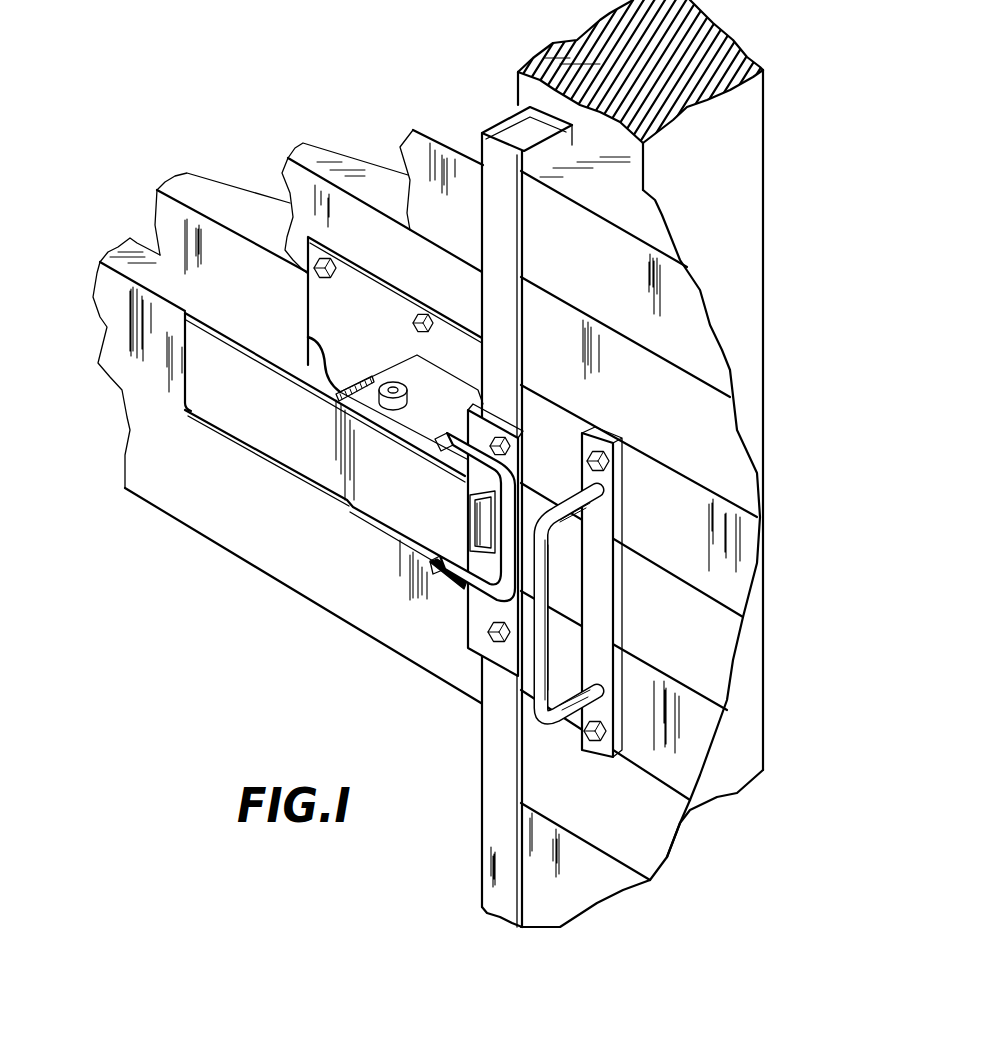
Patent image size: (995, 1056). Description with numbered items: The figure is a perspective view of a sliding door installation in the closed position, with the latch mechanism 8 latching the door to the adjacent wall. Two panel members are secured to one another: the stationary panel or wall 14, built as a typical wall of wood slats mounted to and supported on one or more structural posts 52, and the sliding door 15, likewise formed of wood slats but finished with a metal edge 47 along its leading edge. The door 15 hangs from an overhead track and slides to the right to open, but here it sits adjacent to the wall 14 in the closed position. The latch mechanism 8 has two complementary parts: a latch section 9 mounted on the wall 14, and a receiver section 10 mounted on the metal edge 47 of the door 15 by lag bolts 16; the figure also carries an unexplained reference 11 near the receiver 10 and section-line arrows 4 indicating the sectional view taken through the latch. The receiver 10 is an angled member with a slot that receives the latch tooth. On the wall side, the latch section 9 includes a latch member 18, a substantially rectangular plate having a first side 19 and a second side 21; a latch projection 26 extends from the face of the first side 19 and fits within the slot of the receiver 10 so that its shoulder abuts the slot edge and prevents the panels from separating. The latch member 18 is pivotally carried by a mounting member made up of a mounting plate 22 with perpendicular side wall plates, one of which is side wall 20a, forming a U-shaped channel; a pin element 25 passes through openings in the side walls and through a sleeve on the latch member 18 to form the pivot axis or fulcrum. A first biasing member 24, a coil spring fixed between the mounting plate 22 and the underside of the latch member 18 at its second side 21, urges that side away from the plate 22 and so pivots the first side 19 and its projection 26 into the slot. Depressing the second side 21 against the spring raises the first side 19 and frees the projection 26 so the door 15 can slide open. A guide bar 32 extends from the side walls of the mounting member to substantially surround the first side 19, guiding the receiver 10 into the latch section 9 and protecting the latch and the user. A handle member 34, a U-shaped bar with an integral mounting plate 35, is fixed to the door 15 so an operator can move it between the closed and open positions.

The section line 4- 4 is at (60, 335).
The latch mechanism 8 is at (388, 615).
The latch section 9 is at (337, 518).
The receiver section 10 is at (521, 412).
The channel flange 11 is at (480, 430).
The stationary panel 14 is at (261, 309).
The sliding door 15 is at (712, 432).
The lag bolts 16 is at (317, 263).
The latch member 18 is at (310, 450).
The first side 19 is at (440, 527).
The side wall plate 20a is at (461, 409).
The second side 21 is at (207, 378).
The mounting plate 22 is at (365, 340).
The first biasing member 24 is at (320, 352).
The pin element 25 is at (392, 389).
The latch projection 26 is at (471, 527).
The guide bar 32 is at (450, 580).
The handle member 34 is at (607, 498).
The mounting plate 35 is at (618, 625).
The metal edge 47 is at (494, 155).
The structural posts 52 is at (747, 148).